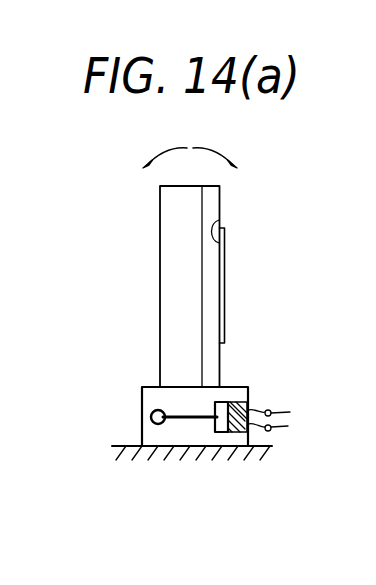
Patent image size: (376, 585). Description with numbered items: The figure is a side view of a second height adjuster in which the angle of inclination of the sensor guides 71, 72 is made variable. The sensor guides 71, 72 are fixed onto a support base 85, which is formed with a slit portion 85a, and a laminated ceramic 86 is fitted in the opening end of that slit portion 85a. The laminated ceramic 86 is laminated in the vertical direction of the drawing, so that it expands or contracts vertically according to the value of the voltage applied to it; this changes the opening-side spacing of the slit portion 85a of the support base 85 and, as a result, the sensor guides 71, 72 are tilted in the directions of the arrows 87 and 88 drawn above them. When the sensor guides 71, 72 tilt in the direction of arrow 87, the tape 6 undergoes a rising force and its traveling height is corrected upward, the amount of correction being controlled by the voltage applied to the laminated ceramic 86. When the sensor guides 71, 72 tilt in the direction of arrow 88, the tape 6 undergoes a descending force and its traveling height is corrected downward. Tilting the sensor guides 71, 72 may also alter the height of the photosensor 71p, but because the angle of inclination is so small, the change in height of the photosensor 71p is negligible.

The tape 6 is at (225, 263).
The sensor guide 71 is at (134, 286).
The sensor guide 72 is at (160, 261).
The photosensor 71p is at (219, 222).
The support base 85 is at (145, 398).
The slit portion 85a is at (182, 425).
The laminated ceramic 86 is at (247, 405).
The arrow 87 is at (170, 152).
The arrow 88 is at (220, 152).